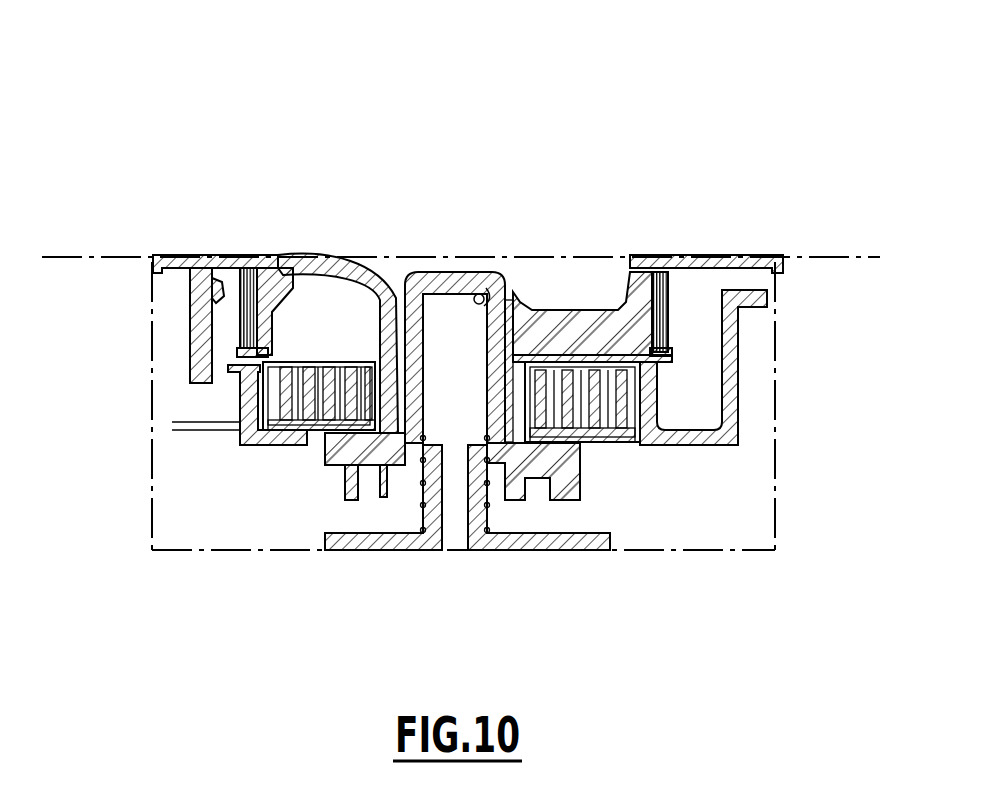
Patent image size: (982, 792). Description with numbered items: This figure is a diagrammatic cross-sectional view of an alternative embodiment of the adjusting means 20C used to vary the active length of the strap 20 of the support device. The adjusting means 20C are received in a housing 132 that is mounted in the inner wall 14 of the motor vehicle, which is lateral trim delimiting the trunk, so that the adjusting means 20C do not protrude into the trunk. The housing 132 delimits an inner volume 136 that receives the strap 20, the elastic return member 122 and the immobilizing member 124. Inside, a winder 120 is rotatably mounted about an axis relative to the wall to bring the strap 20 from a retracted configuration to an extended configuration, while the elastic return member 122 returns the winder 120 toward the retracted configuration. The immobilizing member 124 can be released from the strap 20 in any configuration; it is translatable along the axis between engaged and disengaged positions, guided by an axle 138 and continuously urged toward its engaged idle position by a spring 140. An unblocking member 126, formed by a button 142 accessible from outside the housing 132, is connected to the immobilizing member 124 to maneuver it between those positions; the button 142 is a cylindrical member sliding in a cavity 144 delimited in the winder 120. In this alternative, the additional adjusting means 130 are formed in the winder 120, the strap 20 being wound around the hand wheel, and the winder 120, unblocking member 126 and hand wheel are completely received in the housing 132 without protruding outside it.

The inner wall 14 is at (88, 243).
The strap 20 is at (675, 313).
The adjusting means 20C is at (527, 106).
The winder 120 is at (328, 462).
The elastic return member 122 is at (262, 444).
The immobilizing member 124 is at (342, 489).
The unblocking member 126 is at (428, 270).
The additional adjusting member 130 is at (345, 258).
The housing 132 is at (739, 250).
The inner volume 136 is at (240, 323).
The axle 138 is at (392, 552).
The spring 140 is at (489, 504).
The button 142 is at (458, 270).
The cavity 144 is at (485, 270).